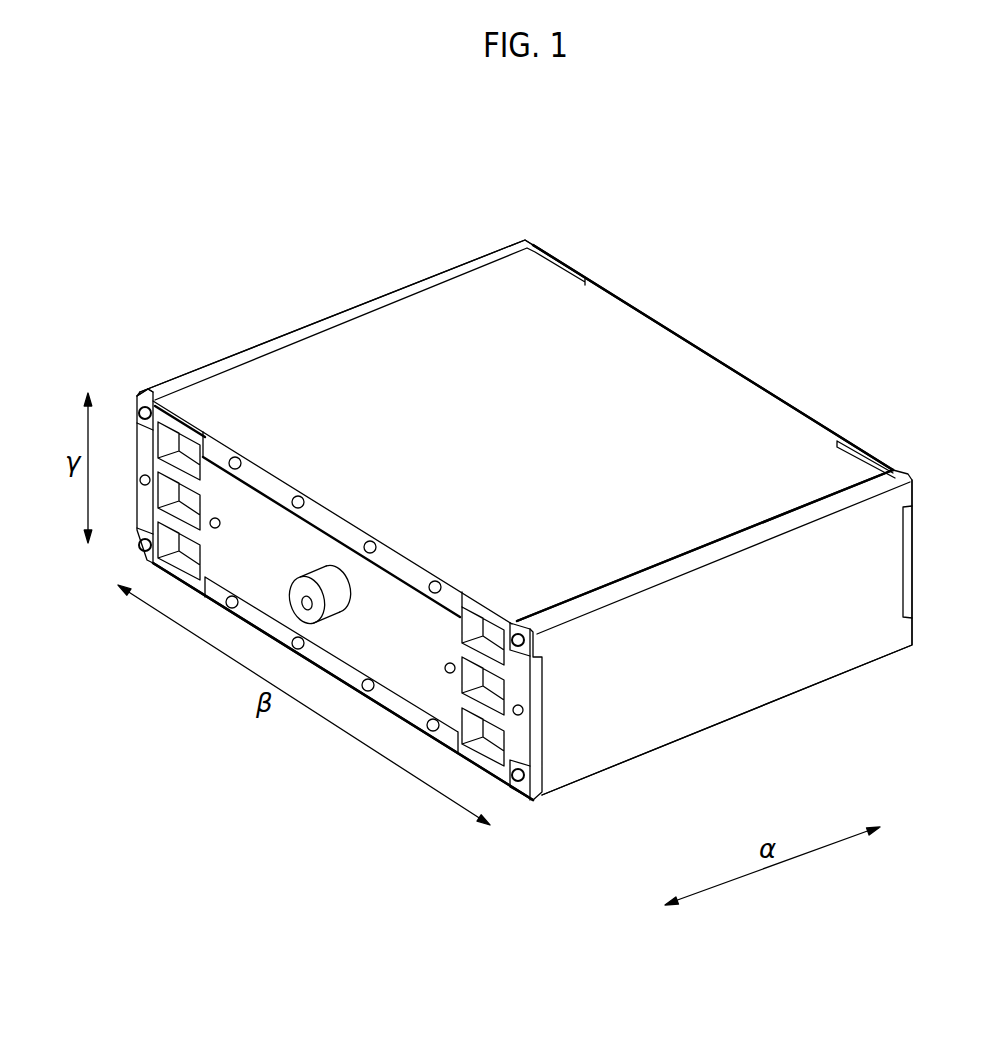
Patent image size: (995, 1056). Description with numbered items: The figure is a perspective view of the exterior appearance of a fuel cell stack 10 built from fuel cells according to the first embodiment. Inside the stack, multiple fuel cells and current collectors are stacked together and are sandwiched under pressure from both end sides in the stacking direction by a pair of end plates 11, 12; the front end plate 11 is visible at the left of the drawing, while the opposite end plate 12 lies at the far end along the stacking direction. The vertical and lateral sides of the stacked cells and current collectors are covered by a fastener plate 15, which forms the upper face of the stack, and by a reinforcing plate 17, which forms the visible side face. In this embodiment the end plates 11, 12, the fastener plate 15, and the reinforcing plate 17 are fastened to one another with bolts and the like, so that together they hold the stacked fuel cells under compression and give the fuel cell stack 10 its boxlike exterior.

The fuel cell stack 10 is at (249, 270).
The end plate 11 is at (393, 618).
The end plate 12 is at (867, 448).
The fastener plate 15 is at (660, 353).
The reinforcing plate 17 is at (778, 682).